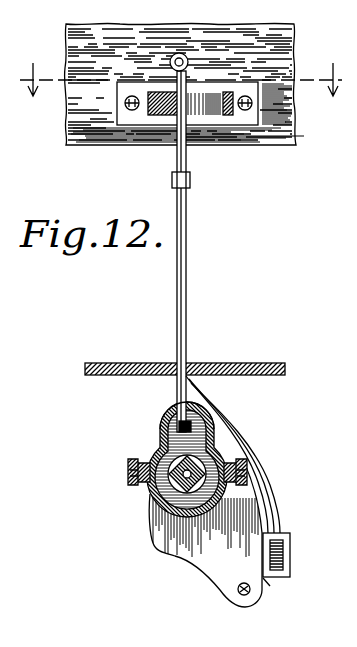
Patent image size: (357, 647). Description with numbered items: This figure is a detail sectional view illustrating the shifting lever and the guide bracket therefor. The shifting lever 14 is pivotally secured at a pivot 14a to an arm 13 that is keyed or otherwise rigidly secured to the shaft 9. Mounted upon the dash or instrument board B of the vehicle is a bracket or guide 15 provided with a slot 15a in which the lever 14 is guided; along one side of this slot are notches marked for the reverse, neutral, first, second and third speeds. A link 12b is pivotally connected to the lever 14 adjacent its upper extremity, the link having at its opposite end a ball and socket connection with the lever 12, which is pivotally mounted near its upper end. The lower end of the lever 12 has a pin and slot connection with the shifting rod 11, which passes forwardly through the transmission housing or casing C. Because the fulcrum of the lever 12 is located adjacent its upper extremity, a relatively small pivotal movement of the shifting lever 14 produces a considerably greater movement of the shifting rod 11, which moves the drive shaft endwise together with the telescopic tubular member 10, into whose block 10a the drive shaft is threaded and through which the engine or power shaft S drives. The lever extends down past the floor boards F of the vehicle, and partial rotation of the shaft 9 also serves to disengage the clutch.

The dash or instrument board B is at (280, 50).
The arm 13 is at (297, 587).
The bracket or guide 15 is at (162, 117).
The slot 15a is at (222, 117).
The floor boards F is at (252, 363).
The transmission housing or casing C is at (160, 418).
The telescopic tubular member 10 is at (207, 460).
The engine or power shaft S is at (155, 450).
The block 10a is at (168, 477).
The shifting lever 14 is at (187, 245).
The shifting rod 11 is at (190, 428).
The lever 12 is at (183, 395).
The link 12b is at (190, 181).
The pivot 14a is at (290, 554).
The shaft 9 is at (241, 600).